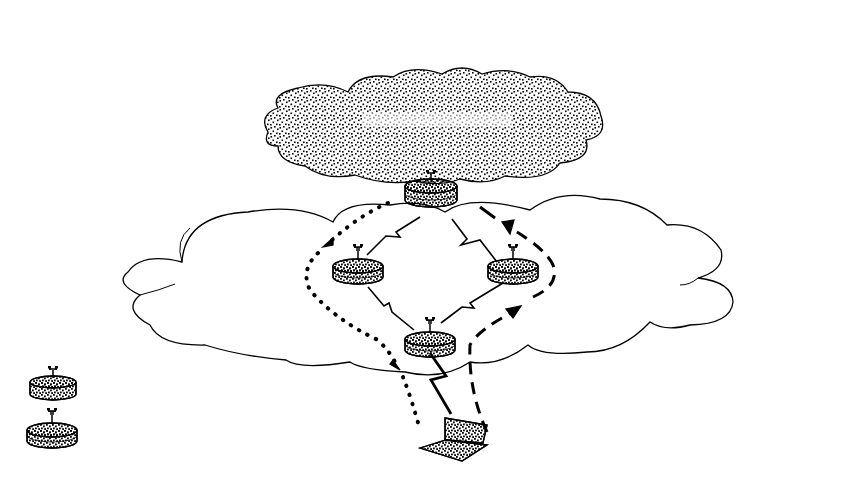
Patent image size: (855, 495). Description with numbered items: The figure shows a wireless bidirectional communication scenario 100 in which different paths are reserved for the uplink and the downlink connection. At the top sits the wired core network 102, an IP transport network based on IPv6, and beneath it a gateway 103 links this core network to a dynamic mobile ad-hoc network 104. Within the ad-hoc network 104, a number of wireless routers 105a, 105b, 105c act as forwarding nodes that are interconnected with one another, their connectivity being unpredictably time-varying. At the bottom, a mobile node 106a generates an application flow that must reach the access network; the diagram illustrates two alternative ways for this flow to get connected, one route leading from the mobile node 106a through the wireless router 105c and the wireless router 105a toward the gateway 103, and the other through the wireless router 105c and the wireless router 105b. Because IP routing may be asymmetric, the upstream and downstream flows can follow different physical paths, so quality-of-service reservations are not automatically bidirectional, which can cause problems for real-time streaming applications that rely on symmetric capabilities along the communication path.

The wireless bidirectional communication scenario 100 is at (397, 258).
The wired core network 102 is at (400, 126).
The gateway 103 is at (396, 189).
The dynamic mobile ad-hoc network 104 is at (428, 285).
The wireless router 105a is at (336, 277).
The wireless router 105b is at (540, 278).
The wireless router 105c is at (434, 321).
The mobile node 106a is at (413, 439).